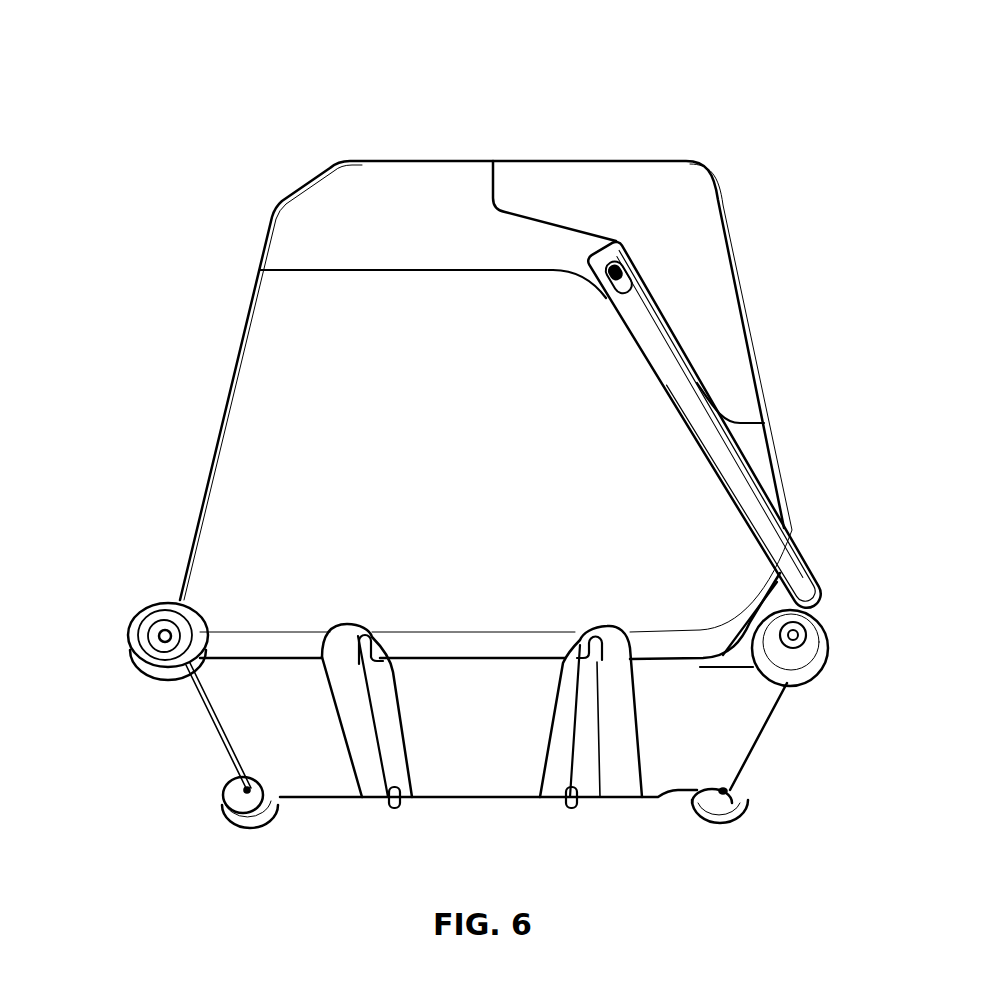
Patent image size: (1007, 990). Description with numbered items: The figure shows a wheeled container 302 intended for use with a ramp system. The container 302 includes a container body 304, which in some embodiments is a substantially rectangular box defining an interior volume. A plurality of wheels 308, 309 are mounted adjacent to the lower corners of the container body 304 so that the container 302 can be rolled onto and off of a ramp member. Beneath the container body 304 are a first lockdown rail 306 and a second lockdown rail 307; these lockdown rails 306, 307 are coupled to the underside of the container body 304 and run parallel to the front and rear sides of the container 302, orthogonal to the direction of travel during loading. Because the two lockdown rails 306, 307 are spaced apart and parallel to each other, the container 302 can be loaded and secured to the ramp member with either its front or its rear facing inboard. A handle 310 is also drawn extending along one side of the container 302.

The wheeled container 302 is at (384, 64).
The container body 304 is at (252, 378).
The first lockdown rail 306 is at (377, 727).
The second lockdown rail 307 is at (578, 698).
The wheel 308 is at (217, 803).
The wheel 309 is at (737, 817).
The handle 310 is at (728, 467).